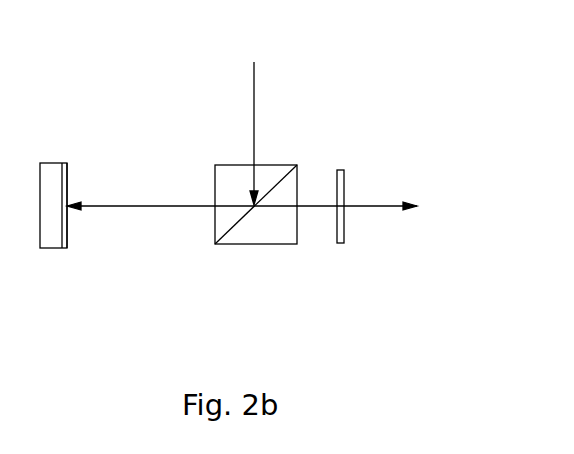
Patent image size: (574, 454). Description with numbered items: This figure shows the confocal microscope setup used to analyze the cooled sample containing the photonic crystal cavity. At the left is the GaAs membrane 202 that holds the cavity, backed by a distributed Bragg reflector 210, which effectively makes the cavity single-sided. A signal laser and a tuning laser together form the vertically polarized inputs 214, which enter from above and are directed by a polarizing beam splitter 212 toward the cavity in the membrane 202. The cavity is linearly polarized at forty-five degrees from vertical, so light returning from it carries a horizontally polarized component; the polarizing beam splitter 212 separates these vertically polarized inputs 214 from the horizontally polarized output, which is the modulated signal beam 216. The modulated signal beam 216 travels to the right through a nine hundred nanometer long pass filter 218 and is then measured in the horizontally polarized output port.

The GaAs membrane 202 is at (65, 177).
The distributed Bragg reflector 210 is at (50, 242).
The polarizing beam splitter 212 is at (272, 235).
The vertically polarized inputs 214 is at (254, 103).
The modulated signal beam 216 is at (388, 207).
The long pass filter 218 is at (345, 177).